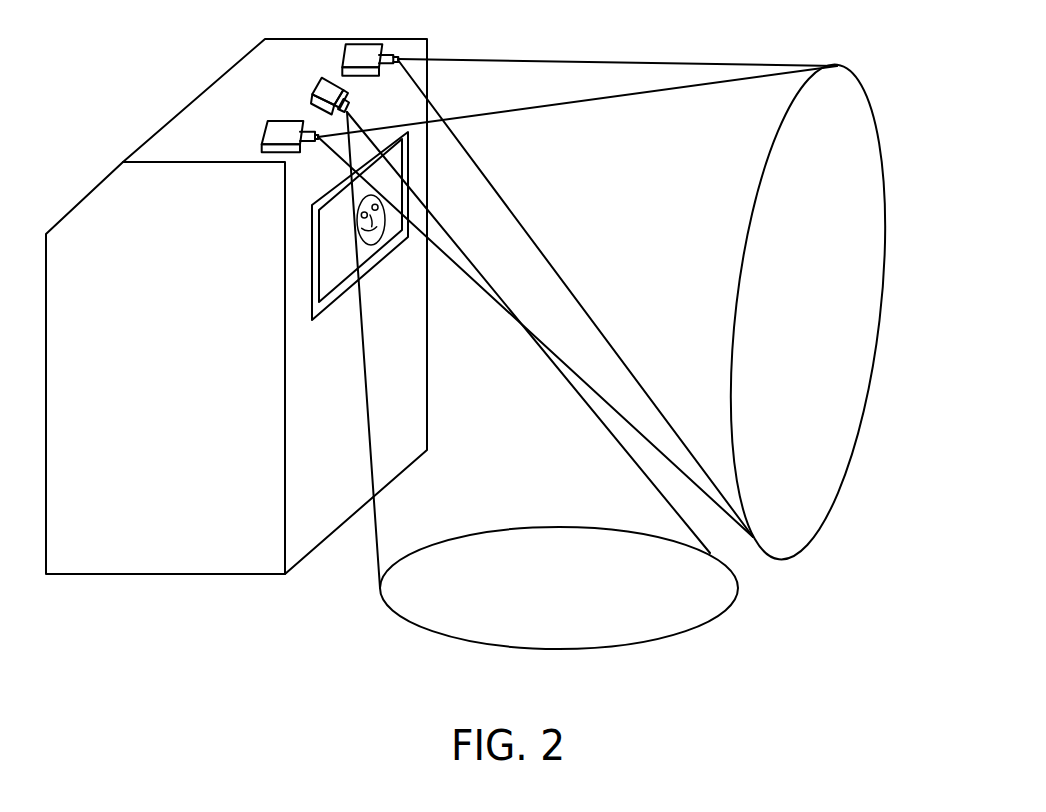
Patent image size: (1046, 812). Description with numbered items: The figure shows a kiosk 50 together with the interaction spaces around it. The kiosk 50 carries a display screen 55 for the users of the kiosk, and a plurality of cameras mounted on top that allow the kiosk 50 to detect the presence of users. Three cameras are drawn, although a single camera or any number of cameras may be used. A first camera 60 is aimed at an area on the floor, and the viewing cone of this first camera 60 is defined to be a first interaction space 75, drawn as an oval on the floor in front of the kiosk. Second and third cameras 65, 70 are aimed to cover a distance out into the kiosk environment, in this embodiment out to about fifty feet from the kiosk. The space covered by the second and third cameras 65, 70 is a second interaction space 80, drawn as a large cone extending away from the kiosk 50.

The kiosk 50 is at (176, 575).
The display screen 55 is at (368, 275).
The first camera 60 is at (320, 78).
The second camera 65 is at (285, 120).
The third camera 70 is at (362, 42).
The first interaction space 75 is at (738, 592).
The second interaction space 80 is at (871, 122).